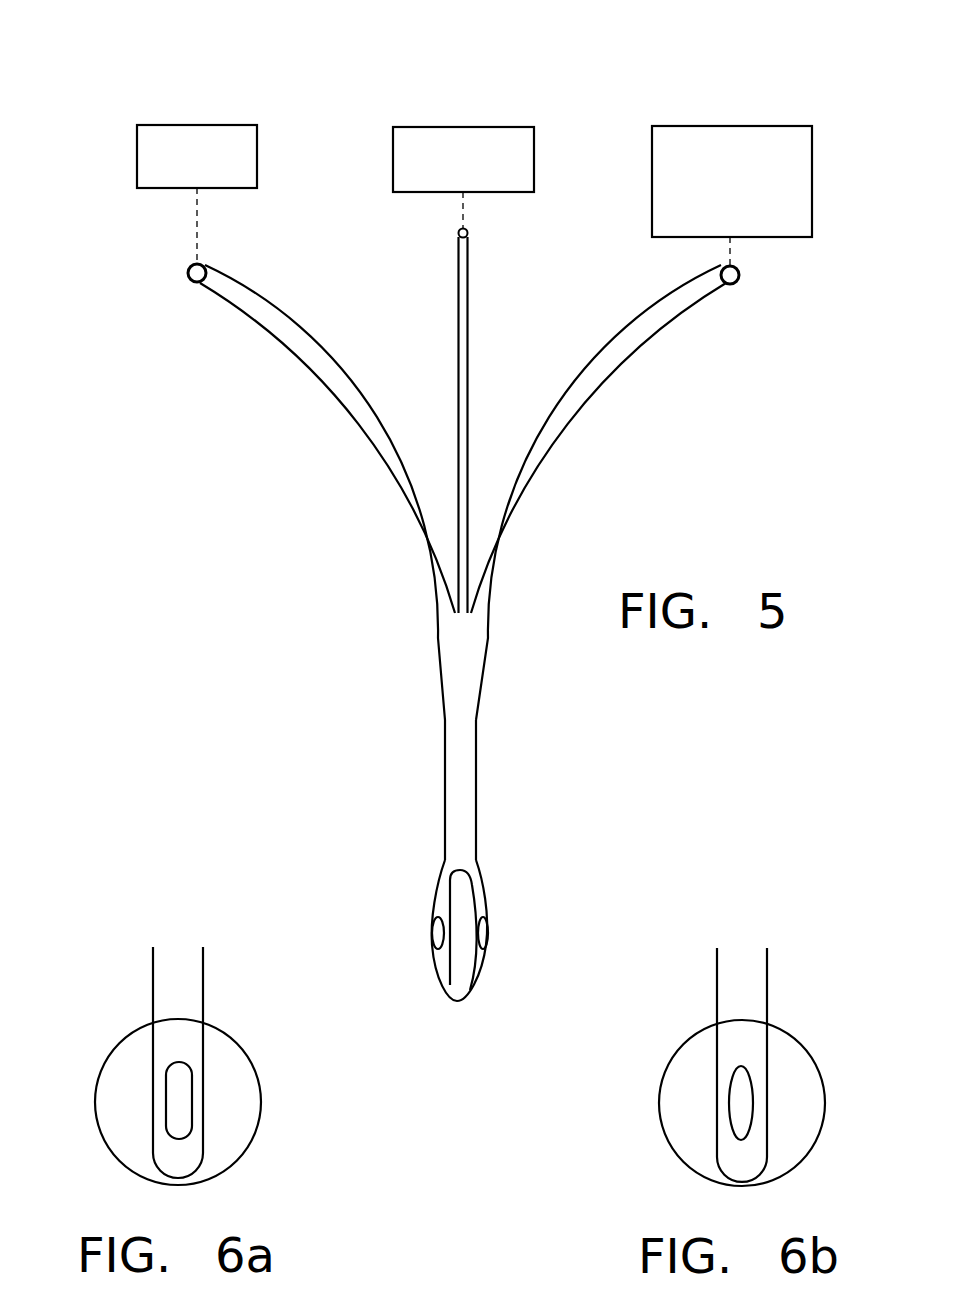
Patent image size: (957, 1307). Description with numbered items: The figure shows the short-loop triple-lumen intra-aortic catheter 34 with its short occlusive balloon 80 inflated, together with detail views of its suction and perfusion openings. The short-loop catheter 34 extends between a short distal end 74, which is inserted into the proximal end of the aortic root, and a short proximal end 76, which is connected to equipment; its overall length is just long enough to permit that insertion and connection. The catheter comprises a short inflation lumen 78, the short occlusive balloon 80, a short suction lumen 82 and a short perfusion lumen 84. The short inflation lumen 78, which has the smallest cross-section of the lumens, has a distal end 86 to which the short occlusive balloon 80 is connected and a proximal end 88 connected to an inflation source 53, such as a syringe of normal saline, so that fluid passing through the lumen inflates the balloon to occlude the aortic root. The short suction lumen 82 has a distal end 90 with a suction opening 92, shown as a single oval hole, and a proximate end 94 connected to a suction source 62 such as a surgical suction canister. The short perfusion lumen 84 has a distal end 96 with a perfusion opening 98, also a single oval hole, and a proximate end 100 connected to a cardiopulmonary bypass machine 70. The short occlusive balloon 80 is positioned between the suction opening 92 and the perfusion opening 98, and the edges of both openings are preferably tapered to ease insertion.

In FIG. 5, the short-loop triple-lumen intra-aortic catheter 34 is at (463, 76).
In FIG. 5, the inflation source 53 is at (393, 192).
In FIG. 5, the suction source 62 is at (137, 188).
In FIG. 5, the cardiopulmonary bypass machine 70 is at (812, 237).
In FIG. 5, the short distal end 74 is at (572, 937).
In FIG. 5, the short proximal end 76 is at (200, 403).
In FIG. 5, the short inflation lumen 78 is at (468, 405).
In FIG. 5, the short occlusive balloon 80 is at (463, 965).
In FIG. 6a, the short occlusive balloon 80 is at (127, 1108).
In FIG. 6b, the short occlusive balloon 80 is at (790, 1100).
In FIG. 5, the short suction lumen 82 is at (349, 375).
In FIG. 6a, the short suction lumen 82 is at (170, 982).
In FIG. 5, the short perfusion lumen 84 is at (637, 353).
In FIG. 6b, the short perfusion lumen 84 is at (743, 988).
In FIG. 5, the distal end of short inflation lumen 86 is at (564, 790).
In FIG. 5, the proximal end of short inflation lumen 88 is at (468, 233).
In FIG. 5, the distal end of short suction lumen 90 is at (564, 790).
In FIG. 5, the suction opening 92 is at (434, 927).
In FIG. 6a, the suction opening 92 is at (180, 1102).
In FIG. 5, the proximate end of short suction lumen 94 is at (190, 282).
In FIG. 5, the distal end of short perfusion lumen 96 is at (518, 826).
In FIG. 5, the perfusion opening 98 is at (486, 930).
In FIG. 6b, the perfusion opening 98 is at (735, 1117).
In FIG. 5, the proximate end of short perfusion lumen 100 is at (737, 283).